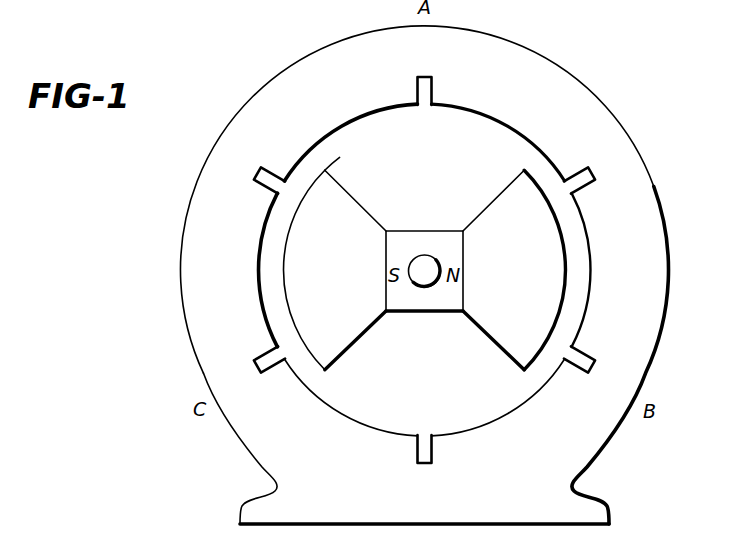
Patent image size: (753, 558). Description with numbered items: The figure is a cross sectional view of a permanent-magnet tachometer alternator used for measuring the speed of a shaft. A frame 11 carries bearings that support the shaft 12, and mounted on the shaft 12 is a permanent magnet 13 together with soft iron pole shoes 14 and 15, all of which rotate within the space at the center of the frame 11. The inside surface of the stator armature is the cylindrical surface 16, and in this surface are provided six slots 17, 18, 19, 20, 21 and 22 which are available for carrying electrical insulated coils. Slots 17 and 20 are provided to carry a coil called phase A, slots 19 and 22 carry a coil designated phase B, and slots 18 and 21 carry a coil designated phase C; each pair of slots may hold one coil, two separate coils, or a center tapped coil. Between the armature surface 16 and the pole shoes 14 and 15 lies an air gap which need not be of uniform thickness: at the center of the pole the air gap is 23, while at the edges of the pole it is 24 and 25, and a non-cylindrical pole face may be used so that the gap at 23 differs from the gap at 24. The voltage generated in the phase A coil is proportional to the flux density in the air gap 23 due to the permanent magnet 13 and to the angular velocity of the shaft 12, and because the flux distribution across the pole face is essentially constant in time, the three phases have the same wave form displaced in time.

The frame 11 is at (235, 432).
The shaft 12 is at (418, 262).
The permanent magnet 13 is at (445, 231).
The soft iron pole shoe 14 is at (357, 199).
The soft iron pole shoe 15 is at (513, 182).
The cylindrical surface 16 is at (352, 118).
The slot 17 is at (428, 75).
The slot 18 is at (594, 171).
The slot 19 is at (594, 362).
The slot 20 is at (425, 470).
The slot 21 is at (262, 358).
The slot 22 is at (278, 167).
The air gap at center of pole 23 is at (262, 267).
The air gap at edge of pole 24 is at (310, 377).
The air gap at edge of pole 25 is at (318, 160).